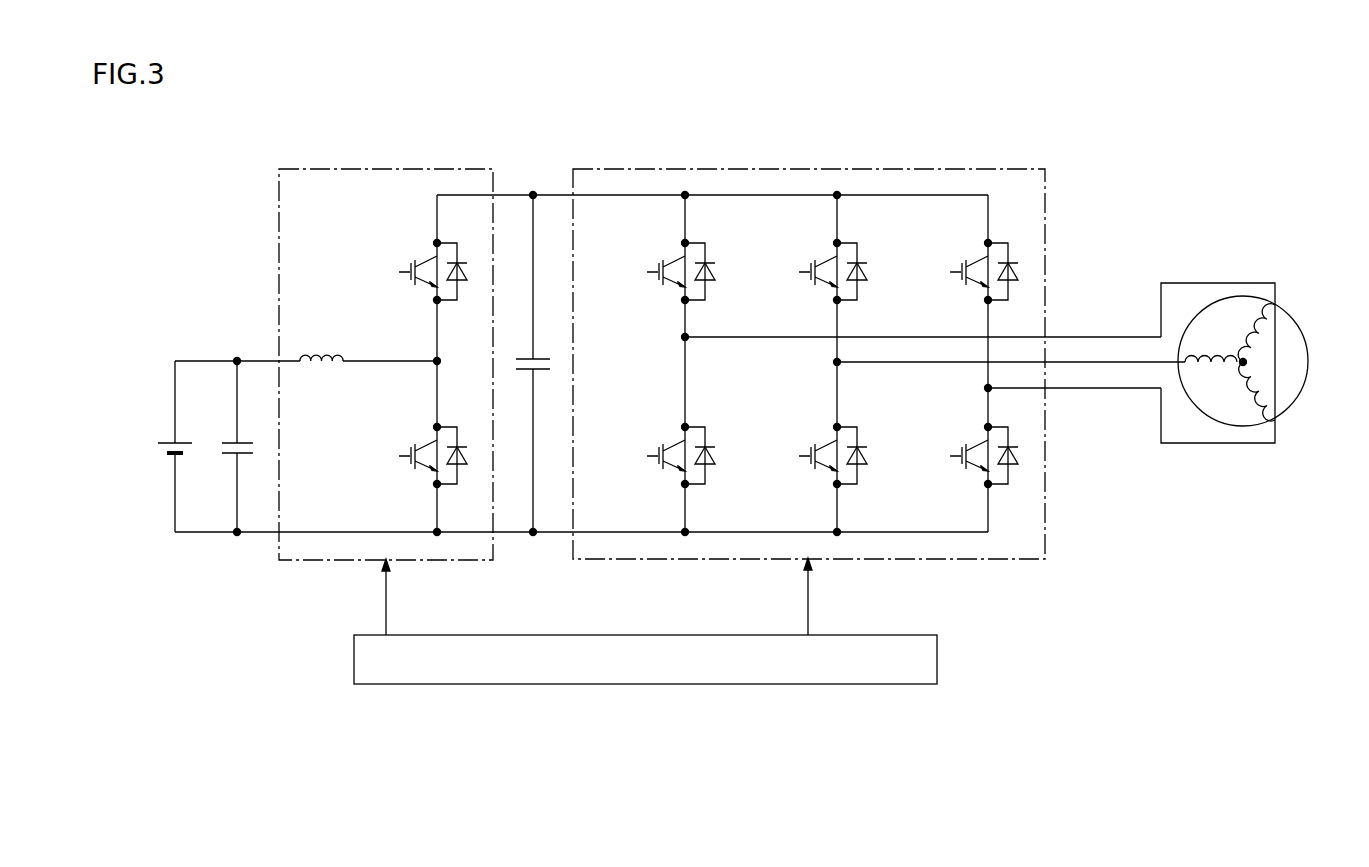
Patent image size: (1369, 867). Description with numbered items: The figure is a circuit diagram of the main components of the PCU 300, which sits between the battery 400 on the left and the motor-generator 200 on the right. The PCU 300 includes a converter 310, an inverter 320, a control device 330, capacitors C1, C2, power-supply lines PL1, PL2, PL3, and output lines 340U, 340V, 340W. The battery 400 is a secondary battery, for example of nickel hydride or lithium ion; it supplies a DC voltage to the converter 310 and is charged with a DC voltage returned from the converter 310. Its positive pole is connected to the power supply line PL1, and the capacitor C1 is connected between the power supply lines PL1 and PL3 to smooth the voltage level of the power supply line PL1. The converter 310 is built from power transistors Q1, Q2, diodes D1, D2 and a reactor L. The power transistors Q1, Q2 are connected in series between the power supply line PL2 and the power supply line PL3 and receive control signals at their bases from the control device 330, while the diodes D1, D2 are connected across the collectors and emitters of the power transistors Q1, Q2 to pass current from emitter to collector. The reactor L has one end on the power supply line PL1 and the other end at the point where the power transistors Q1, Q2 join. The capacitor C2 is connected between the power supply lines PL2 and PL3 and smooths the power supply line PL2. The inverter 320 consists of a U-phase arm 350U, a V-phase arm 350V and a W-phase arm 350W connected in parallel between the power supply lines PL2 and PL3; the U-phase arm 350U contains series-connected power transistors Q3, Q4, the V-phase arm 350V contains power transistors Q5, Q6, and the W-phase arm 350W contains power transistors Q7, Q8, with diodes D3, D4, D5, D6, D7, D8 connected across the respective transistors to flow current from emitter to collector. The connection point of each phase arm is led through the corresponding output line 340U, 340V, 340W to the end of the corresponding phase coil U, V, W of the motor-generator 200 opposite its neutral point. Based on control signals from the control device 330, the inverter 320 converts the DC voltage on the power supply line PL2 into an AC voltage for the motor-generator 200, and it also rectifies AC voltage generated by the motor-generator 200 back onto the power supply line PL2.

The motor-generator 200 is at (1250, 363).
The PCU 300 is at (636, 452).
The converter 310 is at (386, 343).
The inverter 320 is at (809, 342).
The control device 330 is at (645, 643).
The output line 340U is at (718, 338).
The output line 340V is at (886, 364).
The output line 340W is at (1020, 390).
The U-phase arm 350U is at (683, 343).
The V-phase arm 350V is at (830, 369).
The W-phase arm 350W is at (983, 395).
The battery 400 is at (166, 441).
The power supply line PL1 is at (224, 360).
The power supply line PL2 is at (518, 193).
The power supply line PL3 is at (510, 540).
The reactor L is at (318, 353).
The capacitor C1 is at (250, 442).
The capacitor C2 is at (543, 357).
The power transistor Q1 is at (412, 261).
The power transistor Q2 is at (412, 445).
The power transistor Q3 is at (660, 261).
The power transistor Q4 is at (660, 445).
The power transistor Q5 is at (812, 261).
The power transistor Q6 is at (812, 445).
The power transistor Q7 is at (963, 261).
The power transistor Q8 is at (963, 445).
The diode D1 is at (469, 267).
The diode D2 is at (469, 451).
The diode D3 is at (717, 267).
The diode D4 is at (717, 451).
The diode D5 is at (869, 267).
The diode D6 is at (869, 451).
The diode D7 is at (1020, 267).
The diode D8 is at (1019, 456).
The U-phase coil U is at (1262, 333).
The V-phase coil V is at (1211, 348).
The W-phase coil W is at (1254, 391).